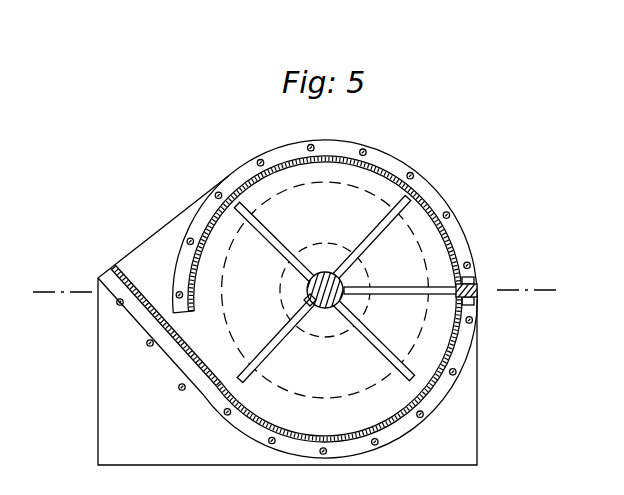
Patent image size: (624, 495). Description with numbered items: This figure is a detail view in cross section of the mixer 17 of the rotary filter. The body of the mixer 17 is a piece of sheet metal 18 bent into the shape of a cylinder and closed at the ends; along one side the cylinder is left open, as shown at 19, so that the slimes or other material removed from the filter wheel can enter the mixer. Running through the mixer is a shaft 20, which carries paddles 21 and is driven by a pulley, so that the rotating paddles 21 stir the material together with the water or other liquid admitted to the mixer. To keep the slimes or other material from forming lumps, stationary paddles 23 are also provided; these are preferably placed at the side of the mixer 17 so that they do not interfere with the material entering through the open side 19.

The mixer 17 is at (430, 187).
The piece of sheet metal 18 is at (182, 354).
The open side 19 is at (197, 237).
The shaft 20 is at (323, 309).
The paddles 21 is at (392, 216).
The stationary paddles 23 is at (397, 287).